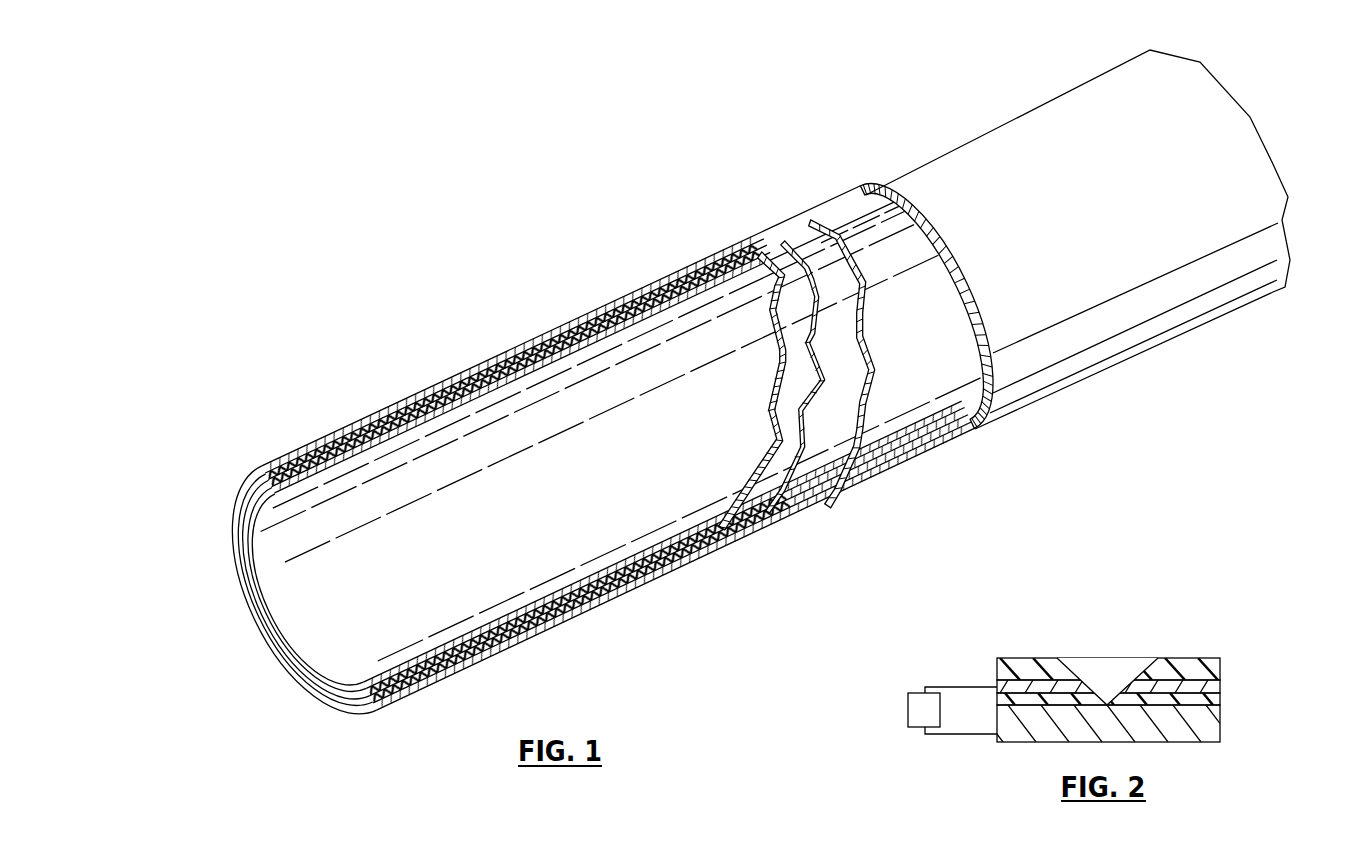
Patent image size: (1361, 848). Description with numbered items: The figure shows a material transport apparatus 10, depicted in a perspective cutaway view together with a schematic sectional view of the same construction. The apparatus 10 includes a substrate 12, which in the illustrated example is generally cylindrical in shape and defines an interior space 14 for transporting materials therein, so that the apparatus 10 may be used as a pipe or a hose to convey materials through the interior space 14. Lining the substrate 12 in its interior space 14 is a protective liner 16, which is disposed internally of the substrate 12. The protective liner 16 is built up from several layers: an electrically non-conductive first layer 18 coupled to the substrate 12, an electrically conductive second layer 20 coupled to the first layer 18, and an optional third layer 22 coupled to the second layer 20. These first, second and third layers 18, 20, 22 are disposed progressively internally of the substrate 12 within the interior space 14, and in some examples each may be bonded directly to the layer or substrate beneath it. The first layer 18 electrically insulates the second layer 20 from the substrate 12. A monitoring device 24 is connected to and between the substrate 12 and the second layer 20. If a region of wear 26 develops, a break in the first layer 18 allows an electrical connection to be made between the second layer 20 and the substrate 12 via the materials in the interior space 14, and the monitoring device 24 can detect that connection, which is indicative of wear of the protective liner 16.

In FIG. 1, the material transport apparatus 10 is at (706, 449).
In FIG. 1, the substrate 12 is at (975, 183).
In FIG. 2, the substrate 12 is at (1207, 727).
In FIG. 1, the interior space 14 is at (298, 641).
In FIG. 1, the protective liner 16 is at (667, 486).
In FIG. 2, the protective liner 16 is at (1169, 686).
In FIG. 1, the first layer 18 is at (857, 382).
In FIG. 2, the first layer 18 is at (1202, 702).
In FIG. 1, the second layer 20 is at (813, 475).
In FIG. 2, the second layer 20 is at (1213, 688).
In FIG. 1, the third layer 22 is at (750, 513).
In FIG. 2, the third layer 22 is at (1142, 663).
In FIG. 2, the monitoring device 24 is at (908, 714).
In FIG. 2, the region of wear 26 is at (1111, 652).